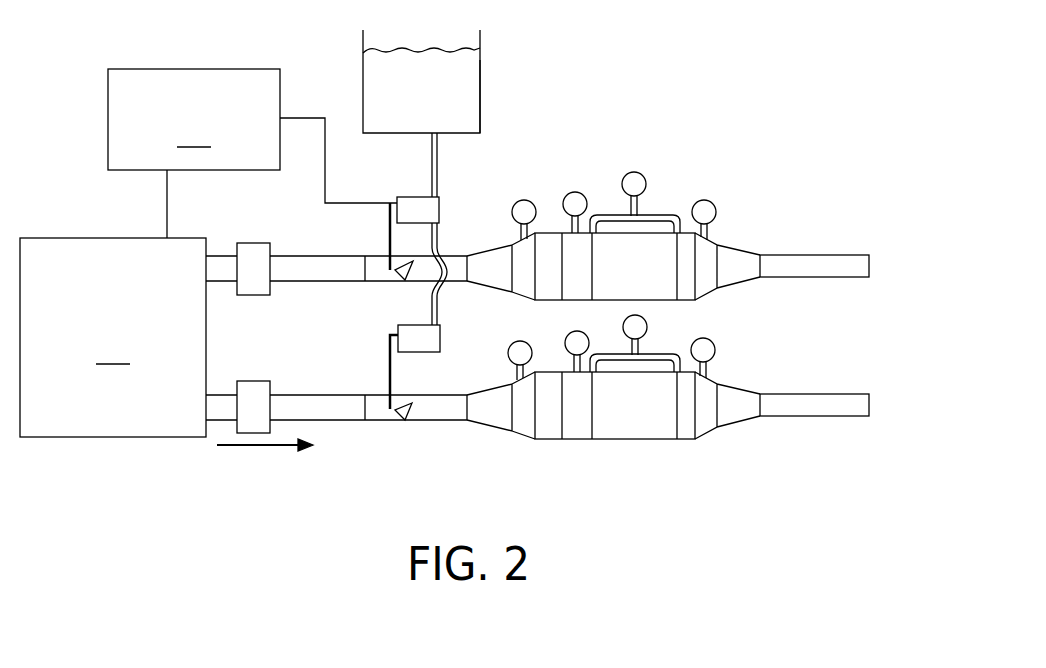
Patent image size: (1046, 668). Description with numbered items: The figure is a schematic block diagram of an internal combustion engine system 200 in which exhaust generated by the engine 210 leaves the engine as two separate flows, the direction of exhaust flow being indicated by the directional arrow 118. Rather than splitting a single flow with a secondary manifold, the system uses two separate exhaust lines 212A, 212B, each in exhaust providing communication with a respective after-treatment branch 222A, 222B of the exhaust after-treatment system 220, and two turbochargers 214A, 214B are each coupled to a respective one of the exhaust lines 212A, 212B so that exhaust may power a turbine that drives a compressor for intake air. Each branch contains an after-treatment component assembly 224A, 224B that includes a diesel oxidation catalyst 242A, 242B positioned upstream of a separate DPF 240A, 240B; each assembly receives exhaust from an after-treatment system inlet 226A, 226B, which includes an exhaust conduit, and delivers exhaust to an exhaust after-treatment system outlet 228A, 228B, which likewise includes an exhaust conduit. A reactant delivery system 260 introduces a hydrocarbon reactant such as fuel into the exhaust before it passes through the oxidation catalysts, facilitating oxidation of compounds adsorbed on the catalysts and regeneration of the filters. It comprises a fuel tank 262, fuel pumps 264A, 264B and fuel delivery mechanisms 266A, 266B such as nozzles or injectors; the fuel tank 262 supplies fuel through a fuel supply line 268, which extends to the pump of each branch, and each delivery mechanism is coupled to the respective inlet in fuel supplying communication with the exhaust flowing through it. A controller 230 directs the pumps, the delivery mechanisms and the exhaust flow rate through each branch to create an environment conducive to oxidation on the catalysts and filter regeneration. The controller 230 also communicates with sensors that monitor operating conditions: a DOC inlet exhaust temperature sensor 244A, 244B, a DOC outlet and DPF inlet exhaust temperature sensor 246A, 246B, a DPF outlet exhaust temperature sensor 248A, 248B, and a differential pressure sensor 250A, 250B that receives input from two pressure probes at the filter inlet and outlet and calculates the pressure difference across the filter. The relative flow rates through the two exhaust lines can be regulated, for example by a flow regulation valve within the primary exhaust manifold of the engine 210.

The internal combustion engine system 200 is at (672, 63).
The directional arrow 118 is at (255, 450).
The engine 210 is at (113, 337).
The exhaust line 212A is at (290, 255).
The exhaust line 212B is at (305, 394).
The turbocharger 214A is at (246, 243).
The turbocharger 214B is at (248, 381).
The exhaust after-treatment system 220 is at (341, 432).
The after-treatment branch 222A is at (688, 170).
The after-treatment branch 222B is at (716, 470).
The after-treatment component assembly 224A is at (715, 297).
The after-treatment component assembly 224B is at (718, 434).
The after-treatment system inlet 226A is at (447, 284).
The after-treatment system inlet 226B is at (452, 421).
The exhaust after-treatment system outlet 228A is at (815, 266).
The exhaust after-treatment system outlet 228B is at (823, 406).
The controller 230 is at (252, 153).
The DPF 240A is at (680, 302).
The DPF 240B is at (638, 441).
The diesel oxidation catalyst 242A is at (550, 301).
The diesel oxidation catalyst 242B is at (555, 441).
The DOC inlet exhaust temperature sensor 244A is at (513, 207).
The DOC inlet exhaust temperature sensor 244B is at (509, 357).
The DOC outlet and DPF inlet exhaust temperature sensor 246A is at (578, 192).
The DOC outlet and DPF inlet exhaust temperature sensor 246B is at (567, 338).
The DPF outlet exhaust temperature sensor 248A is at (717, 207).
The DPF outlet exhaust temperature sensor 248B is at (714, 355).
The differential pressure sensor 250A is at (641, 172).
The differential pressure sensor 250B is at (625, 325).
The reactant delivery system 260 is at (492, 50).
The fuel tank 262 is at (480, 98).
The fuel pump 264A is at (397, 205).
The fuel pump 264B is at (421, 353).
The fuel delivery mechanism 266A is at (398, 277).
The fuel delivery mechanism 266B is at (398, 417).
The fuel supply line 268 is at (437, 144).